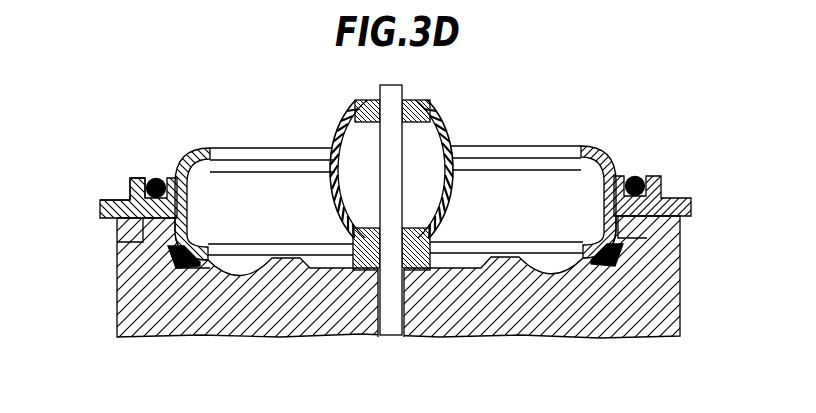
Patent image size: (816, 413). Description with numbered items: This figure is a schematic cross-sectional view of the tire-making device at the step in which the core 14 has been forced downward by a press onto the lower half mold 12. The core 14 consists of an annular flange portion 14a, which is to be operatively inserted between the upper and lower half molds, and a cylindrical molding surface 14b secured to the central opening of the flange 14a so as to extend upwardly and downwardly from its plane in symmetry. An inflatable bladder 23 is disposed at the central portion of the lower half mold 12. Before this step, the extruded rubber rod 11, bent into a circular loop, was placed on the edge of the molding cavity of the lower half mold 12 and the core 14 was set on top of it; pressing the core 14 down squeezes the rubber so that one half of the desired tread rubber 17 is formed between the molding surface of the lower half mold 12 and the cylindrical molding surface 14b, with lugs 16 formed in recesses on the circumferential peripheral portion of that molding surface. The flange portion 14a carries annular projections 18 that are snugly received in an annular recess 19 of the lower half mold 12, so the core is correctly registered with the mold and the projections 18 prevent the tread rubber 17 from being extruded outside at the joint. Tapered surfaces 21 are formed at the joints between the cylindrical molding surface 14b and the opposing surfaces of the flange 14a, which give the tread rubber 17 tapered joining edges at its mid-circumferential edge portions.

The rubber rod 11 is at (157, 178).
The lower half mold 12 is at (137, 268).
The core 14 is at (100, 220).
The annular flange portion 14a is at (116, 200).
The cylindrical molding surface 14b is at (184, 160).
The lugs 16 is at (178, 266).
The tread rubber 17 is at (192, 282).
The annular projections 18 is at (138, 178).
The annular recess 19 is at (160, 236).
The tapered surfaces 21 is at (188, 198).
The inflatable bladder 23 is at (448, 205).